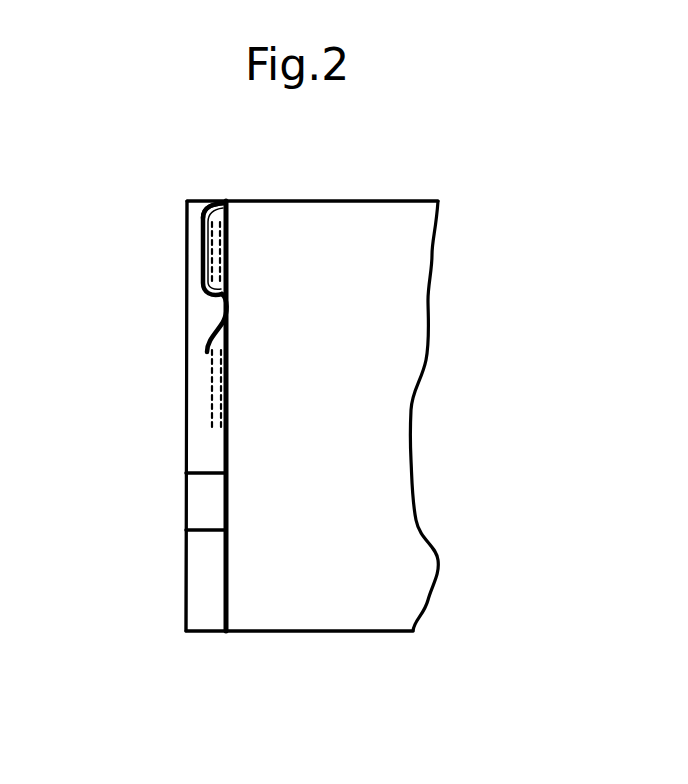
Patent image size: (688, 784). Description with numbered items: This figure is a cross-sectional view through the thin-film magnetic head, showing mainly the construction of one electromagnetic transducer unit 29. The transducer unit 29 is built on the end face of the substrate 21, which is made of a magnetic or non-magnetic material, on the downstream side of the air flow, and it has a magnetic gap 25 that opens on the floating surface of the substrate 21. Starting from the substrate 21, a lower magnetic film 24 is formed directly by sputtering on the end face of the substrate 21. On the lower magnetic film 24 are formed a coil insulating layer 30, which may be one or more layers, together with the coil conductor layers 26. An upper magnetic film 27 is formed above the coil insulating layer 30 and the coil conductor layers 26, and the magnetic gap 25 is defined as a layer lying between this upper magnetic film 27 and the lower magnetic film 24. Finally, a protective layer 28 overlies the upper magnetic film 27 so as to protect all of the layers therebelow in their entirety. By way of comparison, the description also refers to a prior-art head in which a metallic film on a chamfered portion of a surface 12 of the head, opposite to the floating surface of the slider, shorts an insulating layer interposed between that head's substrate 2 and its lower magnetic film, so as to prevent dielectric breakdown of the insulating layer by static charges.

The substrate 2 is at (388, 448).
The surface of the magnetic head 12 is at (325, 633).
The substrate 21 is at (336, 199).
The lower magnetic film 24 is at (216, 370).
The magnetic gap 25 is at (228, 200).
The coil conductor layers 26 is at (214, 297).
The upper magnetic film 27 is at (203, 268).
The protective layer 28 is at (190, 430).
The electromagnetic transducer unit 29 is at (172, 213).
The coil insulating layer 30 is at (222, 246).